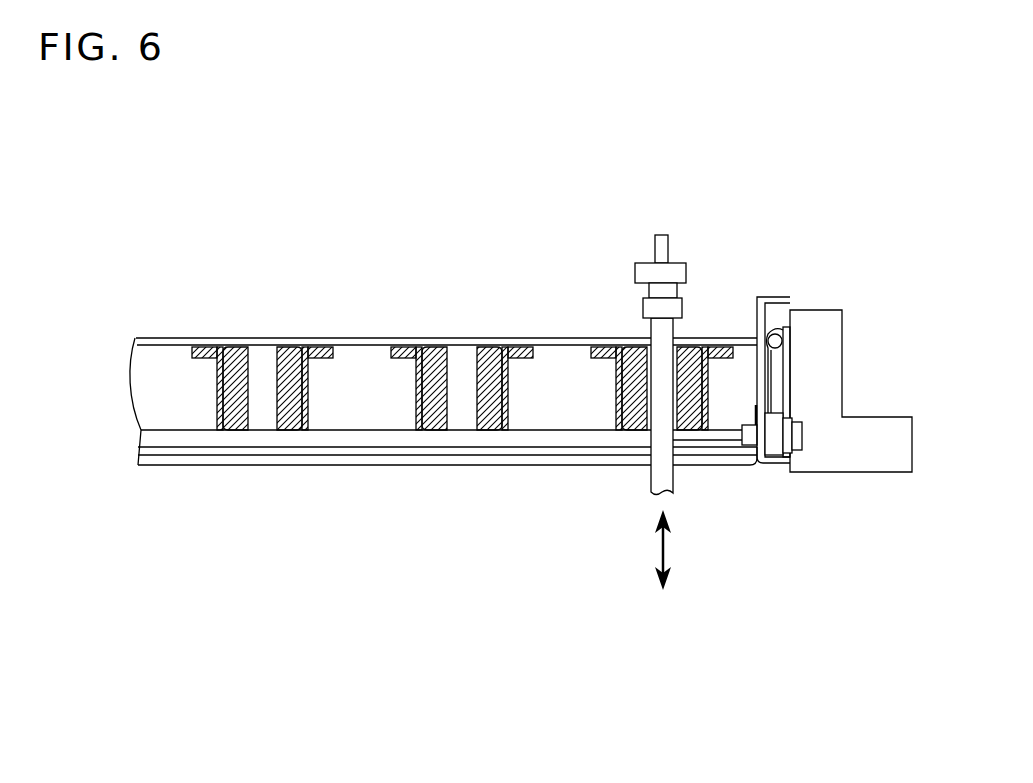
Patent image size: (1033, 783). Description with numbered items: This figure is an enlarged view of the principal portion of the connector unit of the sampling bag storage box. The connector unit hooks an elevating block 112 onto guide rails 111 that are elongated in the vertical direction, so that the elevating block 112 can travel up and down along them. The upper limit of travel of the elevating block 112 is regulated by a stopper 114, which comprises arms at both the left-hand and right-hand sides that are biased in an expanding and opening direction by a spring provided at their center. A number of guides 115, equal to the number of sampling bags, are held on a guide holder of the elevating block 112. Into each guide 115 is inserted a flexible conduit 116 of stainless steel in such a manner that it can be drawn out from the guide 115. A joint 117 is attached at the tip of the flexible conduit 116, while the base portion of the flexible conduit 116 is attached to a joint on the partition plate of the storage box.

The guide rail 111 is at (778, 327).
The elevating block 112 is at (259, 336).
The stopper 114 is at (537, 435).
The guide 115 is at (445, 352).
The flexible conduit 116 is at (663, 453).
The joint 117 is at (670, 270).